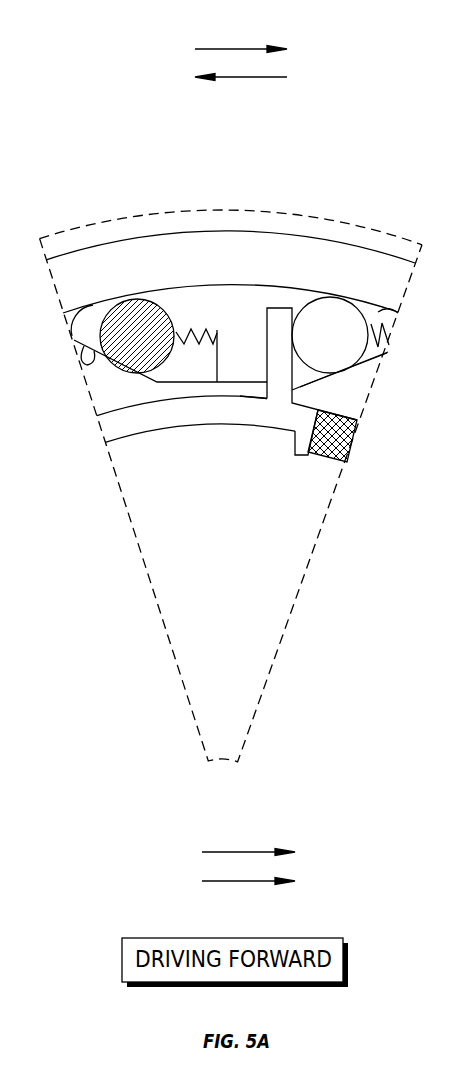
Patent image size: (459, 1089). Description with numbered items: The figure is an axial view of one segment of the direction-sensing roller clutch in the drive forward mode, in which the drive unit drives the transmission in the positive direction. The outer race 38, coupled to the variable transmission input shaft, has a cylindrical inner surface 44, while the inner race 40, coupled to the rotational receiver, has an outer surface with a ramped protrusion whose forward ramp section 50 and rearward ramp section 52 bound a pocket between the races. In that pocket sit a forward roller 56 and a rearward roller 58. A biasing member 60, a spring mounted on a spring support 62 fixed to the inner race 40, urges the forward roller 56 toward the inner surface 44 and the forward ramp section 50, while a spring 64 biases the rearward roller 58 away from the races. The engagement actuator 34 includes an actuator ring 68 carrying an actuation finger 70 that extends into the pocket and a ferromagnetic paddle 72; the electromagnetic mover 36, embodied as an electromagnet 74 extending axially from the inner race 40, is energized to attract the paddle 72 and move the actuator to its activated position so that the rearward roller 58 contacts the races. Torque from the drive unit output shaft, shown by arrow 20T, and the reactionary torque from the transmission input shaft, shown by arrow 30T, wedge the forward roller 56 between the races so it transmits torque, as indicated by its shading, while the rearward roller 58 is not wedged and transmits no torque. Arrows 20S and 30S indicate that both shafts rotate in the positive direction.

The arrow indicating drive unit output shaft rotation 20S is at (247, 852).
The arrow indicating drive unit output shaft torque 20T is at (247, 881).
The arrow indicating transmission input shaft rotation 30S is at (245, 49).
The arrow indicating transmission input shaft reactionary torque 30T is at (247, 78).
The engagement actuator 34 is at (307, 328).
The electromagnetic mover 36 is at (308, 484).
The outer race 38 is at (50, 290).
The inner race 40 is at (110, 389).
The cylindrical inner surface 44 is at (86, 336).
The forward ramp section 50 is at (79, 367).
The rearward ramp section 52 is at (384, 354).
The forward roller 56 is at (100, 339).
The rearward roller 58 is at (369, 327).
The biasing member 60 is at (201, 330).
The spring support 62 is at (215, 360).
The spring 64 is at (389, 351).
The actuator ring 68 is at (239, 386).
The actuation finger 70 is at (285, 297).
The paddle 72 is at (280, 437).
The electromagnet 74 is at (370, 438).